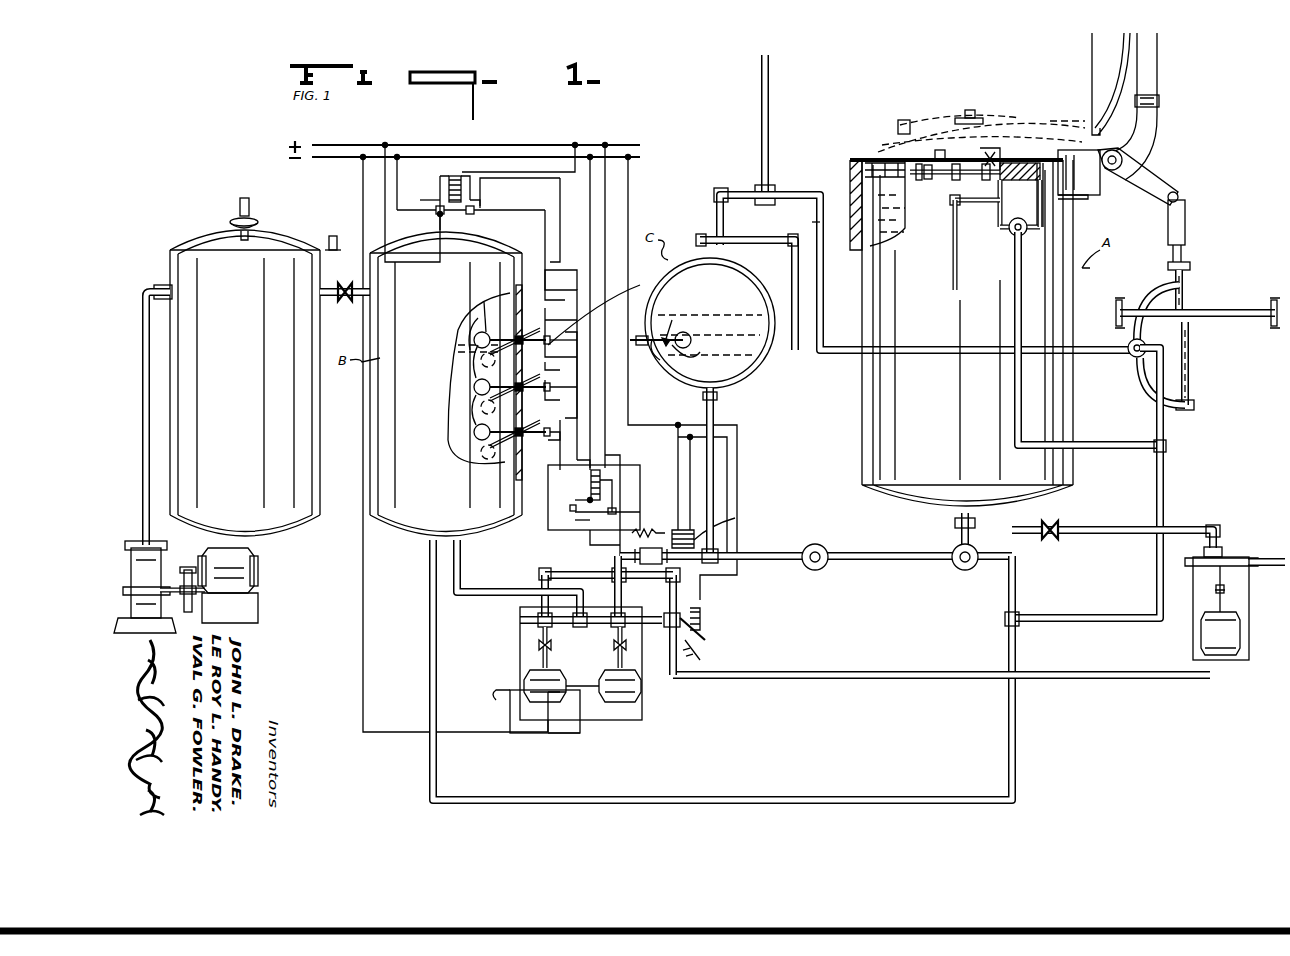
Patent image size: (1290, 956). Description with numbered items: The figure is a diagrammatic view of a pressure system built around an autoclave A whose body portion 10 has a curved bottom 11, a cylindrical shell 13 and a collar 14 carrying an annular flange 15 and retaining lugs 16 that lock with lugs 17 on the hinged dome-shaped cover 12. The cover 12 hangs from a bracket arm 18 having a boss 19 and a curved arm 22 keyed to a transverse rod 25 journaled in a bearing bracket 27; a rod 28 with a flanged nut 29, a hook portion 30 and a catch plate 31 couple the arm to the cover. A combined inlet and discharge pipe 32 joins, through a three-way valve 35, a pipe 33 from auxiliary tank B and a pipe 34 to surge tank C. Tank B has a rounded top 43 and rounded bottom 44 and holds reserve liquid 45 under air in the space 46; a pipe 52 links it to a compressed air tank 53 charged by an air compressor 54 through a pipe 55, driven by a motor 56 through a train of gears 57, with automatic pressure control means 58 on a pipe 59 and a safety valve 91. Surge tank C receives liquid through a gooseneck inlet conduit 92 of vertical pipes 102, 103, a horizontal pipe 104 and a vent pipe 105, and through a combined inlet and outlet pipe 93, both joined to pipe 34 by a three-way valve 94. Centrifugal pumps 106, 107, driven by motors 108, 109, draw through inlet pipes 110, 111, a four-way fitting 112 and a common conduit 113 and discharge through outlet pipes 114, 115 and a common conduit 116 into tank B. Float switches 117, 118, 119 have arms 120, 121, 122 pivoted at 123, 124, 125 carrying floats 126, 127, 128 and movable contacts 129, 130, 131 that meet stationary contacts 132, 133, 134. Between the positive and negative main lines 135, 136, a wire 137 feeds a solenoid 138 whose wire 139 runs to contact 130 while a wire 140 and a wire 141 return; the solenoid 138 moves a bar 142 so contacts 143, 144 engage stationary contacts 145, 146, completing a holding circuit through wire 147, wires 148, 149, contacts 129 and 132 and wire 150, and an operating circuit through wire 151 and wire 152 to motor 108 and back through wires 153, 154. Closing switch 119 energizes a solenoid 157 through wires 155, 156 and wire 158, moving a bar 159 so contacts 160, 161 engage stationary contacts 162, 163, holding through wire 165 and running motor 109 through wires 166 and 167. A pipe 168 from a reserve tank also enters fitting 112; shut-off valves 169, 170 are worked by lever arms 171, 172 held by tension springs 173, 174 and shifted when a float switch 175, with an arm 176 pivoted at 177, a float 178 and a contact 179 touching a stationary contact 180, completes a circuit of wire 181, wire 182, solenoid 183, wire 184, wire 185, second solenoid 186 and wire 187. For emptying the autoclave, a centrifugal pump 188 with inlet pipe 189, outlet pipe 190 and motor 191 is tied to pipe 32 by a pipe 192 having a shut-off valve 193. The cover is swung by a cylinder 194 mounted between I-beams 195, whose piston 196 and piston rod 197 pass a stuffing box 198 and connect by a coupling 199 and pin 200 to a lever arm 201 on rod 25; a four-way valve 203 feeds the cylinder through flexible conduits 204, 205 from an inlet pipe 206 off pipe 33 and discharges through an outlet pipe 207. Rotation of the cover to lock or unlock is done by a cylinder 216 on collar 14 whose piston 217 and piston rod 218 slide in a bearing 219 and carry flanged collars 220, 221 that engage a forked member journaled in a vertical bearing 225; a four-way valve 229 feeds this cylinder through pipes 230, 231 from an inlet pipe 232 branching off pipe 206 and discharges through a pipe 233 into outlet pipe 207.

The body portion 10 is at (853, 262).
The curved bottom 11 is at (892, 490).
The cover 12 is at (902, 152).
The cylindrical shell 13 is at (880, 300).
The collar 14 is at (852, 203).
The annular flange 15 is at (862, 182).
The retaining lugs 16 is at (858, 155).
The lugs 17 is at (864, 170).
The bracket arm 18 is at (1040, 110).
The boss 19 is at (958, 114).
The curved arm 22 is at (1078, 110).
The transverse rod 25 is at (1150, 186).
The bearing bracket 27 is at (1090, 180).
The rod 28 is at (975, 116).
The flanged nut 29 is at (968, 108).
The hook portion 30 is at (900, 132).
The catch plate 31 is at (940, 150).
The combined inlet and discharge pipe 32 is at (955, 524).
The pipe 33 is at (1004, 598).
The pipe 34 is at (870, 565).
The three-way valve 35 is at (955, 568).
The rounded top 43 is at (498, 240).
The rounded bottom 44 is at (420, 530).
The liquid 45 is at (462, 462).
The space 46 is at (470, 312).
The pipe 52 is at (335, 296).
The compressed air tank 53 is at (175, 278).
The air compressor 54 is at (128, 570).
The pipe 55 is at (144, 340).
The motor 56 is at (264, 572).
The train of gears 57 is at (190, 610).
The automatic pressure control means 58 is at (238, 206).
The pipe 59 is at (256, 228).
The safety valve 91 is at (330, 236).
The inlet conduit 92 is at (742, 186).
The combined inlet and outlet pipe 93 is at (717, 400).
The three-way valve 94 is at (833, 547).
The vertical pipe 102 is at (712, 218).
The vertical pipe 103 is at (814, 220).
The horizontal pipe 104 is at (790, 192).
The vent pipe 105 is at (762, 72).
The centrifugal pump 106 is at (530, 600).
The centrifugal pump 107 is at (652, 626).
The motor 108 is at (545, 705).
The motor 109 is at (616, 720).
The inlet pipe 110 is at (608, 574).
The inlet pipe 111 is at (624, 590).
The four-way fitting 112 is at (614, 582).
The common conduit 113 is at (640, 550).
The outlet pipe 114 is at (556, 647).
The outlet pipe 115 is at (604, 647).
The common conduit 116 is at (462, 596).
The float switch 117 is at (463, 337).
The float switch 118 is at (463, 391).
The float switch 119 is at (463, 436).
The arm 120 is at (474, 342).
The arm 121 is at (484, 402).
The arm 122 is at (481, 452).
The pivot 123 is at (501, 361).
The pivot 124 is at (494, 368).
The pivot 125 is at (496, 414).
The float 126 is at (485, 305).
The float 127 is at (470, 372).
The float 128 is at (468, 420).
The electrical contact 129 is at (544, 352).
The electrical contact 130 is at (552, 391).
The electrical contact 131 is at (544, 440).
The stationary contact 132 is at (545, 314).
The stationary contact 133 is at (543, 370).
The stationary contact 134 is at (552, 422).
The positive main line 135 is at (335, 145).
The negative main line 136 is at (385, 157).
The wire 137 is at (397, 145).
The solenoid 138 is at (455, 176).
The wire 139 is at (524, 194).
The wire 140 is at (577, 375).
The wire 141 is at (575, 168).
The bar 142 is at (442, 222).
The movable contact 143 is at (436, 209).
The movable contact 144 is at (474, 210).
The stationary contact 145 is at (428, 200).
The stationary contact 146 is at (478, 200).
The wire 147 is at (472, 180).
The wire 148 is at (528, 212).
The wire 149 is at (645, 282).
The wire 150 is at (552, 272).
The wire 151 is at (425, 218).
The wire 152 is at (440, 178).
The wire 153 is at (508, 692).
The wire 154 is at (363, 690).
The wire 155 is at (615, 136).
The wire 156 is at (614, 481).
The solenoid 157 is at (600, 474).
The wire 158 is at (586, 472).
The bar 159 is at (578, 522).
The movable contact 160 is at (570, 512).
The movable contact 161 is at (615, 507).
The stationary contact 162 is at (575, 500).
The stationary contact 163 is at (616, 508).
The wire 165 is at (548, 525).
The wire 166 is at (605, 539).
The wire 167 is at (566, 740).
The pipe 168 is at (800, 668).
The shut-off valve 169 is at (680, 576).
The shut-off valve 170 is at (668, 612).
The lever arm 171 is at (665, 518).
The lever arm 172 is at (698, 622).
The tension spring 173 is at (645, 523).
The tension spring 174 is at (686, 650).
The float switch 175 is at (672, 320).
The arm 176 is at (688, 330).
The pivot 177 is at (654, 350).
The float 178 is at (692, 340).
The electrical contact 179 is at (648, 350).
The stationary contact 180 is at (656, 318).
The wire 181 is at (628, 200).
The wire 182 is at (622, 408).
The solenoid 183 is at (710, 616).
The wire 184 is at (740, 576).
The wire 185 is at (690, 432).
The solenoid 186 is at (732, 516).
The wire 187 is at (676, 444).
The centrifugal pump 188 is at (1208, 526).
The inlet pipe 189 is at (1225, 548).
The outlet pipe 190 is at (1268, 556).
The motor 191 is at (1206, 636).
The pipe 192 is at (1132, 526).
The shut-off valve 193 is at (1045, 540).
The cylinder 194 is at (1192, 366).
The I-beams 195 is at (1192, 335).
The piston 196 is at (1195, 392).
The piston rod 197 is at (1188, 288).
The stuffing box 198 is at (1190, 262).
The coupling 199 is at (1186, 220).
The pin 200 is at (1180, 196).
The lever arm 201 is at (1168, 186).
The four-way valve 203 is at (1128, 356).
The flexible conduit 204 is at (1145, 396).
The flexible conduit 205 is at (1150, 290).
The inlet pipe 206 is at (1166, 472).
The outlet pipe 207 is at (976, 345).
The cylinder 216 is at (1022, 163).
The piston 217 is at (1020, 195).
The piston rod 218 is at (929, 180).
The bearing 219 is at (930, 178).
The flanged collar 220 is at (962, 180).
The flanged collar 221 is at (988, 180).
The vertical bearing 225 is at (992, 148).
The four-way valve 229 is at (1010, 236).
The pipe 230 is at (1000, 212).
The pipe 231 is at (1046, 215).
The inlet pipe 232 is at (1014, 273).
The discharge pipe 233 is at (950, 265).